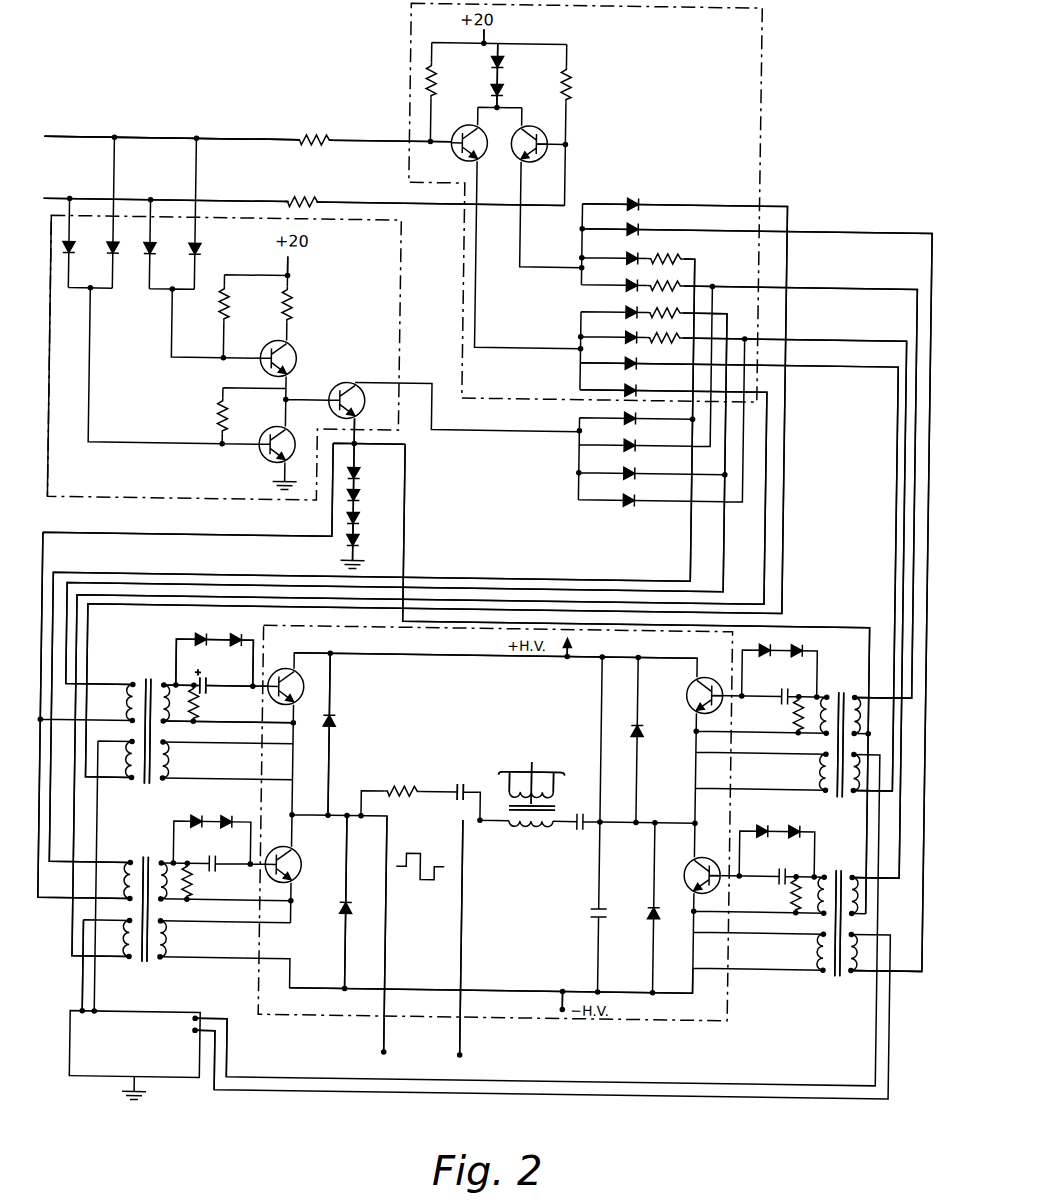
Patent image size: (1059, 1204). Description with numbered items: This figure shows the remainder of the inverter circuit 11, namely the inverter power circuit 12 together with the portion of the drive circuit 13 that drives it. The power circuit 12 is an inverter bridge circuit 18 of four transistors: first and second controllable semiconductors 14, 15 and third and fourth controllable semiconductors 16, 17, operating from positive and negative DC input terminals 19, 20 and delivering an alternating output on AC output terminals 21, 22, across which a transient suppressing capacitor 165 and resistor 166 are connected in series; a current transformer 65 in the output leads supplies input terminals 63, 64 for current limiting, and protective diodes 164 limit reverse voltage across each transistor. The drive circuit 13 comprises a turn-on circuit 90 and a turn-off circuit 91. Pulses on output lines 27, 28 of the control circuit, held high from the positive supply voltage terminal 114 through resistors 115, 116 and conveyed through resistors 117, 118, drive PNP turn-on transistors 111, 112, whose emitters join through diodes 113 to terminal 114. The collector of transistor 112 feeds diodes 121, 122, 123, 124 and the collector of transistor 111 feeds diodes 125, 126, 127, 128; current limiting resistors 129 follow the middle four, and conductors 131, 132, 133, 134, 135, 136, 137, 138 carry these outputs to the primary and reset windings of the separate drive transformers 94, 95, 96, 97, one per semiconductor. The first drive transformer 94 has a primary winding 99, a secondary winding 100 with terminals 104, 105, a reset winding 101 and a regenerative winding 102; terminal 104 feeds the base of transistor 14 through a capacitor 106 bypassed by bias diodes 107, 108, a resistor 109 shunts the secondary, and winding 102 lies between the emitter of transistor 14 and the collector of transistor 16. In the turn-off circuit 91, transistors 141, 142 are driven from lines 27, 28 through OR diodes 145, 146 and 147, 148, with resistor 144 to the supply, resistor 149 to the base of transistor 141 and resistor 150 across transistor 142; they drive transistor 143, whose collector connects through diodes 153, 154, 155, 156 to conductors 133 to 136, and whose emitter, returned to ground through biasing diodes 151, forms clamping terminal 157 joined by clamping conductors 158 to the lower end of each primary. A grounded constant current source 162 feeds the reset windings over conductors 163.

The inverter circuit 11 is at (145, 124).
The inverter power circuit 12 is at (728, 1040).
The drive circuit 13 is at (35, 355).
The first controllable semiconductor 14 is at (304, 695).
The second controllable semiconductor 15 is at (688, 693).
The third controllable semiconductor 16 is at (304, 876).
The fourth controllable semiconductor 17 is at (690, 868).
The inverter bridge circuit 18 is at (484, 709).
The positive DC input terminal 19 is at (578, 650).
The negative DC input terminal 20 is at (560, 1009).
The AC output terminal 21 is at (388, 1054).
The AC output terminal 22 is at (468, 1056).
The output line 27 is at (56, 143).
The output line 28 is at (56, 205).
The input terminal 63 is at (505, 790).
The input terminal 64 is at (556, 792).
The current transformer 65 is at (515, 826).
The turn-on circuit 90 is at (766, 97).
The turn-off circuit 91 is at (398, 317).
The first drive transformer 94 is at (149, 686).
The second drive transformer 95 is at (840, 688).
The third drive transformer 96 is at (150, 862).
The fourth drive transformer 97 is at (840, 866).
The primary winding 99 is at (132, 710).
The secondary winding 100 is at (180, 703).
The reset winding 101 is at (132, 766).
The regenerative winding 102 is at (171, 766).
The secondary terminal 104 is at (165, 686).
The secondary terminal 105 is at (166, 727).
The capacitor 106 is at (208, 682).
The diode 107 is at (204, 640).
The diode 108 is at (238, 640).
The resistor 109 is at (200, 708).
The first turn-on transistor 111 is at (462, 126).
The second turn-on transistor 112 is at (548, 134).
The diodes 113 is at (497, 91).
The positive supply voltage terminal 114 is at (482, 42).
The resistor 115 is at (427, 85).
The resistor 116 is at (562, 92).
The resistor 117 is at (311, 140).
The resistor 118 is at (307, 203).
The diode 121 is at (634, 198).
The diode 122 is at (634, 228).
The diode 123 is at (624, 255).
The diode 124 is at (624, 282).
The diode 125 is at (624, 309).
The diode 126 is at (624, 334).
The diode 127 is at (624, 360).
The diode 128 is at (624, 387).
The current limiting resistors 129 is at (661, 256).
The conductor 131 is at (706, 202).
The conductor 132 is at (710, 228).
The conductor 133 is at (692, 270).
The conductor 134 is at (806, 284).
The conductor 135 is at (723, 311).
The conductor 136 is at (806, 336).
The conductor 137 is at (806, 362).
The conductor 138 is at (766, 392).
The first turn-off transistor 141 is at (292, 350).
The second turn-off transistor 142 is at (258, 455).
The third turn-off transistor 143 is at (350, 385).
The resistor 144 is at (288, 305).
The diode 145 is at (194, 260).
The diode 146 is at (148, 257).
The diode 147 is at (108, 262).
The diode 148 is at (68, 256).
The resistor 149 is at (225, 310).
The resistor 150 is at (217, 410).
The biasing diodes 151 is at (358, 544).
The diode 153 is at (624, 415).
The diode 154 is at (624, 442).
The diode 155 is at (624, 470).
The diode 156 is at (624, 497).
The clamping terminal 157 is at (353, 448).
The clamping conductors 158 is at (300, 538).
The constant current source 162 is at (132, 1017).
The conductors 163 is at (88, 1010).
The protective diodes 164 is at (334, 730).
The transient suppressing capacitor 165 is at (458, 789).
The resistor 166 is at (405, 798).